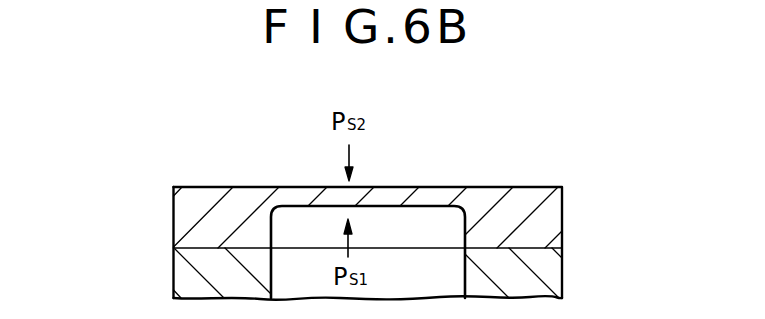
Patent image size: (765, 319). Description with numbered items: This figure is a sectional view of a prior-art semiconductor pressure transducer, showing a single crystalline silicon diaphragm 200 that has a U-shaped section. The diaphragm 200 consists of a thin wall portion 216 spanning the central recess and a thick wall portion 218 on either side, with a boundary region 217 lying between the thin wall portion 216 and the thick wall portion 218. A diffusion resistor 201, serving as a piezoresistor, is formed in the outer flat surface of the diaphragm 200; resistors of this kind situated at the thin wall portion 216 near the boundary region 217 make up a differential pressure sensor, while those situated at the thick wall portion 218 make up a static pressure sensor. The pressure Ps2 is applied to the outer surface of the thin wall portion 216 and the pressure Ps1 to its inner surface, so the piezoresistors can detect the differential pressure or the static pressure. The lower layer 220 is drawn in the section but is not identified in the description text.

The single crystalline silicon diaphragm 200 is at (175, 215).
The diffusion resistor 201 is at (523, 190).
The thin wall portion 216 is at (403, 189).
The boundary region 217 is at (272, 197).
The thick wall portion 218 is at (210, 197).
The lower layer 220 is at (175, 275).